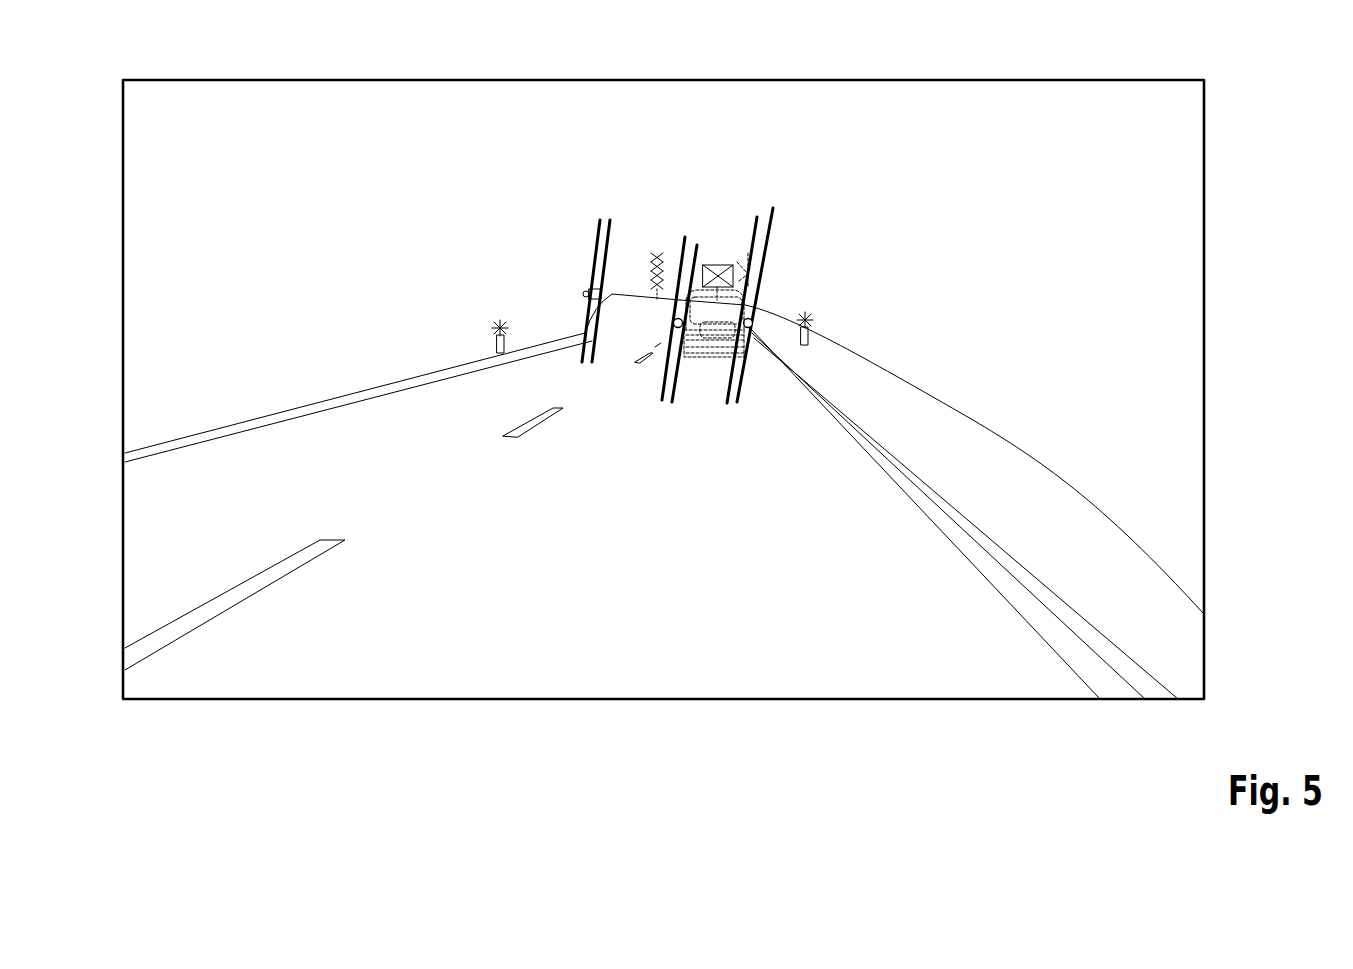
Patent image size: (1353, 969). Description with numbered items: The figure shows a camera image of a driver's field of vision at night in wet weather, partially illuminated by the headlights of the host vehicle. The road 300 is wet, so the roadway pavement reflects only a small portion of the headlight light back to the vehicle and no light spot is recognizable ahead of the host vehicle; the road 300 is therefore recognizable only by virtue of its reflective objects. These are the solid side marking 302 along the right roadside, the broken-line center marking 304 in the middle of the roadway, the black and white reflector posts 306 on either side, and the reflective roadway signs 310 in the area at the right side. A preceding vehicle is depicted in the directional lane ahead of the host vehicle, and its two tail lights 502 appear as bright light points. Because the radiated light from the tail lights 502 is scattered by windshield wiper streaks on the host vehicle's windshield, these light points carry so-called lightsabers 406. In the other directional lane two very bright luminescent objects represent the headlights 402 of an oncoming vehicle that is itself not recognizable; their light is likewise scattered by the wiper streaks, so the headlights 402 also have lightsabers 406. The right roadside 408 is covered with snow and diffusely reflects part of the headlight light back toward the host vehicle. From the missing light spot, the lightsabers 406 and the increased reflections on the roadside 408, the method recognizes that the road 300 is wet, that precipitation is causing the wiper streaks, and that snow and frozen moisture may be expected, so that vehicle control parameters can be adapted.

The road 300 is at (477, 677).
The solid side marking 302 is at (1110, 677).
The broken-line center marking 304 is at (173, 630).
The reflector posts 306 is at (500, 327).
The reflective roadway signs 310 is at (659, 253).
The headlights of an oncoming vehicle 402 is at (585, 295).
The lightsabers 406 is at (743, 377).
The right roadside 408 is at (1075, 538).
The tail lights 502 is at (687, 340).